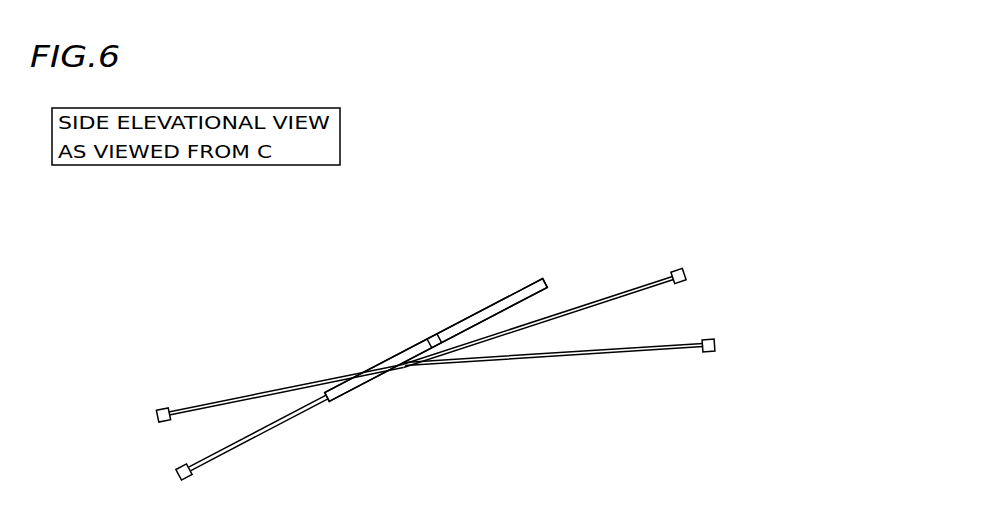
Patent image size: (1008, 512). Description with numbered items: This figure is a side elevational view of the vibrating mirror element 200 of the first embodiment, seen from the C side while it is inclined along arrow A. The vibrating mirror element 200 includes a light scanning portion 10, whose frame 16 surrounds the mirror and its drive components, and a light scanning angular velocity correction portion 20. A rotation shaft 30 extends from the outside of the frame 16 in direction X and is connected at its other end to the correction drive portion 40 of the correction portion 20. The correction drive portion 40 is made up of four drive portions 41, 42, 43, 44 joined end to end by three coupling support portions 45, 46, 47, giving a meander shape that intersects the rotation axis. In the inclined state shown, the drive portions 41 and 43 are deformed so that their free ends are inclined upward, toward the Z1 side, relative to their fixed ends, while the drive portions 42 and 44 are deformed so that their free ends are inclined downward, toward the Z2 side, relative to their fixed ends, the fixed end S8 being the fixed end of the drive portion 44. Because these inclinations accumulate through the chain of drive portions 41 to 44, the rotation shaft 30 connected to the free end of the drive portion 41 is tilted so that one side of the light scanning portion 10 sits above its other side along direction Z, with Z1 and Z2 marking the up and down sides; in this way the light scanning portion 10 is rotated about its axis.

The light scanning portion 10 is at (481, 300).
The frame 16 is at (385, 373).
The rotation shaft 30 is at (436, 333).
The drive portion 41 is at (255, 433).
The drive portion 42 is at (580, 306).
The drive portion 43 is at (287, 387).
The drive portion 44 is at (555, 357).
The coupling support portion 45 is at (183, 465).
The coupling support portion 46 is at (677, 268).
The coupling support portion 47 is at (160, 407).
The fixed end S8 is at (708, 340).
The vibrating mirror element 200 is at (704, 128).
The light scanning angular velocity correction portion 20 is at (766, 188).
The correction drive portion 40 is at (756, 300).
The Z1 side Z1 is at (762, 360).
The Z2 side Z2 is at (757, 413).
The direction Z is at (806, 365).